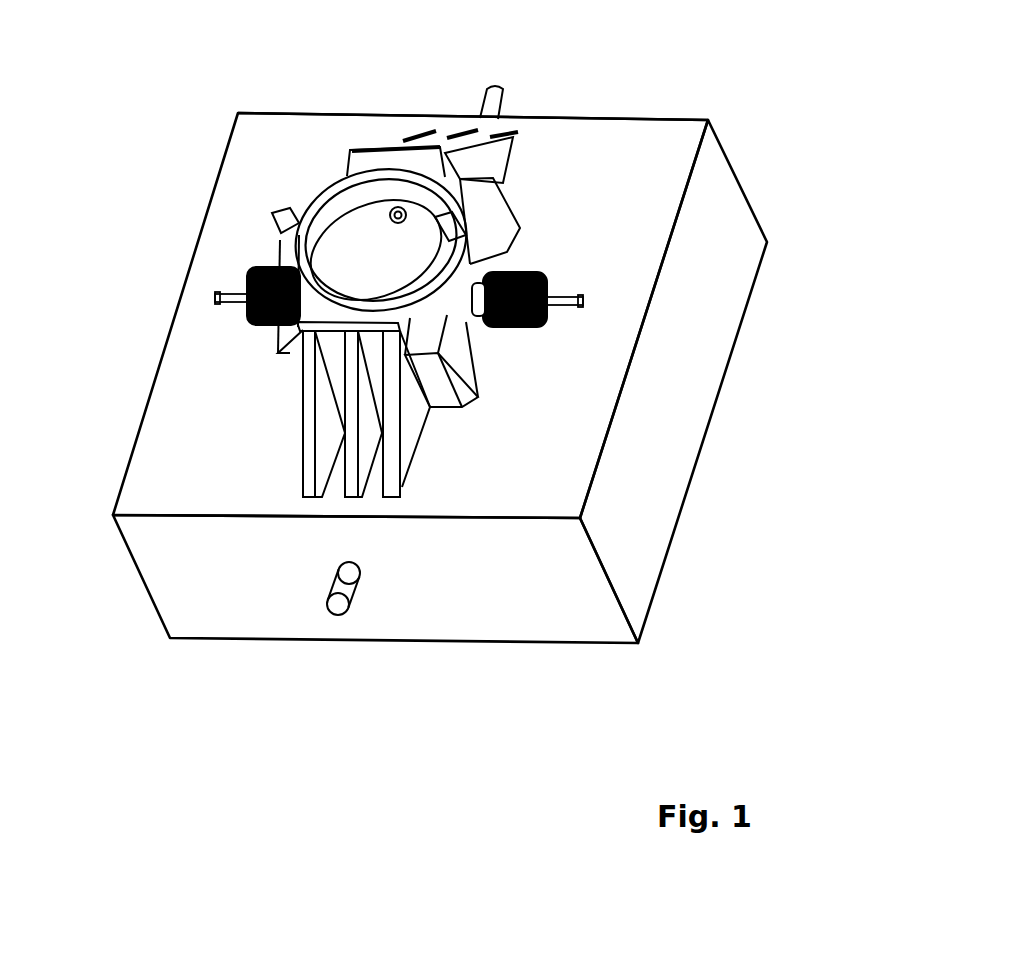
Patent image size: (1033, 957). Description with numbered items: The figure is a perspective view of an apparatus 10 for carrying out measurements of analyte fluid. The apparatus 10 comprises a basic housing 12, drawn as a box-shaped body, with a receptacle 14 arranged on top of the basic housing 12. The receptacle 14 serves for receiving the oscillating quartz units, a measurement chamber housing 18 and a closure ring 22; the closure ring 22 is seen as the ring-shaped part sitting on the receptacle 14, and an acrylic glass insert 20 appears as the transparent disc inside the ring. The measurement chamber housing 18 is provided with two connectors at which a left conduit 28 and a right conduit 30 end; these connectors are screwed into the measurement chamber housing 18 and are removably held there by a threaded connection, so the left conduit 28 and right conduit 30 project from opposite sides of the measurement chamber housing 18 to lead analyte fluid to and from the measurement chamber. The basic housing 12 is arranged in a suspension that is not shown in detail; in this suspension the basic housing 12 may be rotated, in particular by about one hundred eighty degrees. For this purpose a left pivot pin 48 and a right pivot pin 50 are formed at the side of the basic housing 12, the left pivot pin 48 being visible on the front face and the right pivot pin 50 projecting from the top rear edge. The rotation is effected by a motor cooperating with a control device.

The apparatus 10 is at (451, 734).
The basic housing 12 is at (230, 222).
The receptacle 14 is at (497, 260).
The measurement chamber housing 18 is at (468, 325).
The acrylic glass insert 20 is at (387, 247).
The closure ring 22 is at (338, 173).
The conduit, left 28 is at (247, 290).
The conduit, right 30 is at (587, 302).
The pivot pin, left 48 is at (342, 616).
The pivot pin, right 50 is at (502, 103).